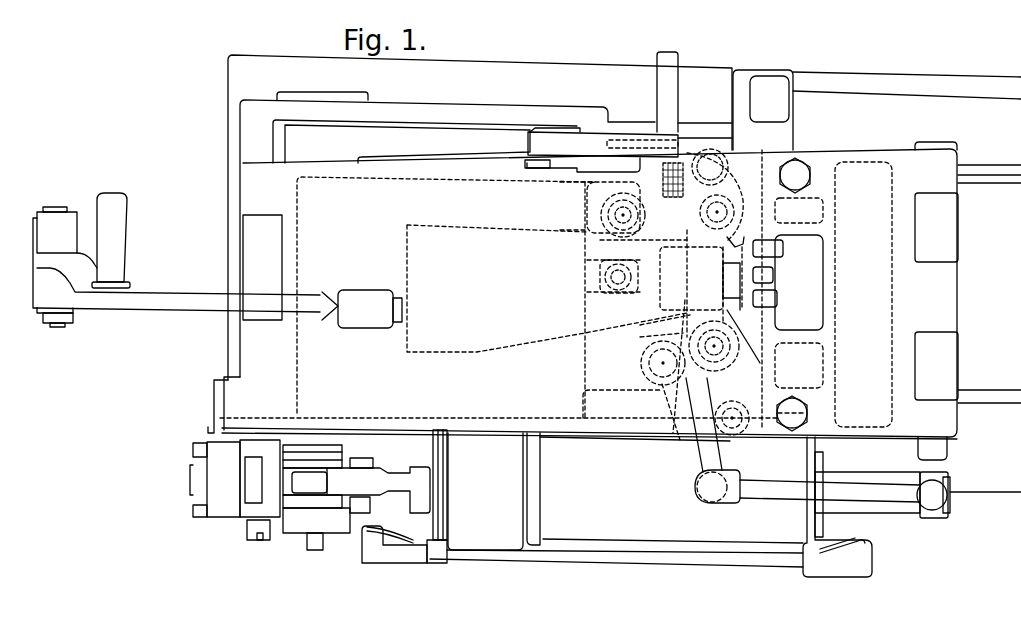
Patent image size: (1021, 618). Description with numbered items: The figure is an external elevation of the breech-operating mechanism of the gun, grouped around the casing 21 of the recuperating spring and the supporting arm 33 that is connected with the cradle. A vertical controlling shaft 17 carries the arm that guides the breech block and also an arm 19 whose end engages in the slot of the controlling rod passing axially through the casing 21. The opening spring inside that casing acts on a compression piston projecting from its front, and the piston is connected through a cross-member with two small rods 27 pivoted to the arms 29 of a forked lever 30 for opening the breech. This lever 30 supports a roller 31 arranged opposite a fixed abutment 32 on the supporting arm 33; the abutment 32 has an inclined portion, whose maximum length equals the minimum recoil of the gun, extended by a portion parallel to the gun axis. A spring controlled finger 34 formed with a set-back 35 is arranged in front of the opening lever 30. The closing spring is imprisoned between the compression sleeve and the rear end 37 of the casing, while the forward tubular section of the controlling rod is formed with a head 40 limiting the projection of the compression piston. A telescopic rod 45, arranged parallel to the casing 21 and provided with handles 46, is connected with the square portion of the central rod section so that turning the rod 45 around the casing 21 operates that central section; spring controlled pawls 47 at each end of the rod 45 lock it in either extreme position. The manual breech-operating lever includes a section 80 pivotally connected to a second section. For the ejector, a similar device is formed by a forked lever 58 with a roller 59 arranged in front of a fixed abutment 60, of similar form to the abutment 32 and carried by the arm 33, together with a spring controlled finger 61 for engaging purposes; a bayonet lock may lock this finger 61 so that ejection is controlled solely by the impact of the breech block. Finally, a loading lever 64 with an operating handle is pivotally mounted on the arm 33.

The vertical controlling shaft 17 is at (317, 456).
The arm 19 is at (339, 470).
The casing 21 is at (647, 521).
The small rods 27 is at (838, 493).
The arms of the forked lever 29 is at (693, 461).
The forked lever 30 is at (656, 396).
The roller 31 is at (712, 377).
The fixed abutment 32 is at (543, 343).
The supporting arm 33 is at (612, 436).
The spring controlled finger 34 is at (753, 362).
The set-back 35 is at (737, 380).
The rear end of the casing 37 is at (437, 524).
The head 40 is at (946, 512).
The rod 45 is at (561, 558).
The handles 46 is at (372, 554).
The spring controlled pawls 47 is at (371, 535).
The forked lever 58 is at (653, 203).
The roller 59 is at (743, 198).
The fixed abutment 60 is at (673, 241).
The spring controlled finger 61 is at (744, 237).
The loading lever 64 is at (166, 296).
The lever section 80 is at (573, 146).